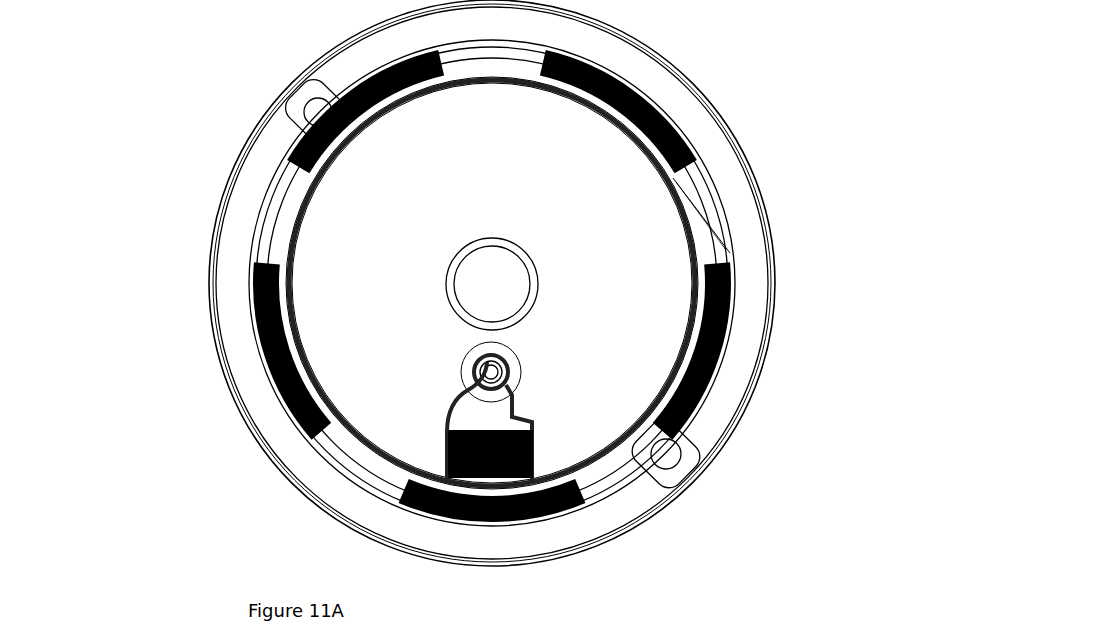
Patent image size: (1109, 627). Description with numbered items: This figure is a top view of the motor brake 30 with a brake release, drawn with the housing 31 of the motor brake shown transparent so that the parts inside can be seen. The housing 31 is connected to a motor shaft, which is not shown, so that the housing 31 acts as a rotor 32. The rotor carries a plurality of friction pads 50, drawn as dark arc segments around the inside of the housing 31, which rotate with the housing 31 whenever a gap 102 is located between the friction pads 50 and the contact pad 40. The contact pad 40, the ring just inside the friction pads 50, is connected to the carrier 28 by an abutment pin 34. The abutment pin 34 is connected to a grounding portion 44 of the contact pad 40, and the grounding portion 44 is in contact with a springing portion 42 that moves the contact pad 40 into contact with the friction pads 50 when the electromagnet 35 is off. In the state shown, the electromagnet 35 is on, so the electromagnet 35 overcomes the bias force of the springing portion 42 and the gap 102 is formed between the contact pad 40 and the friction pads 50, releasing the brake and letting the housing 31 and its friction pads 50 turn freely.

The motor brake 30 is at (186, 75).
The housing 31 is at (513, 6).
The rotor 32 is at (492, 283).
The carrier 28 is at (285, 133).
The contact pad 40 is at (300, 215).
The friction pads 50 is at (258, 337).
The gap 102 is at (730, 253).
The abutment pin 34 is at (460, 372).
The grounding portion 44 is at (452, 417).
The springing portion 42 is at (523, 393).
The electromagnet 35 is at (552, 463).